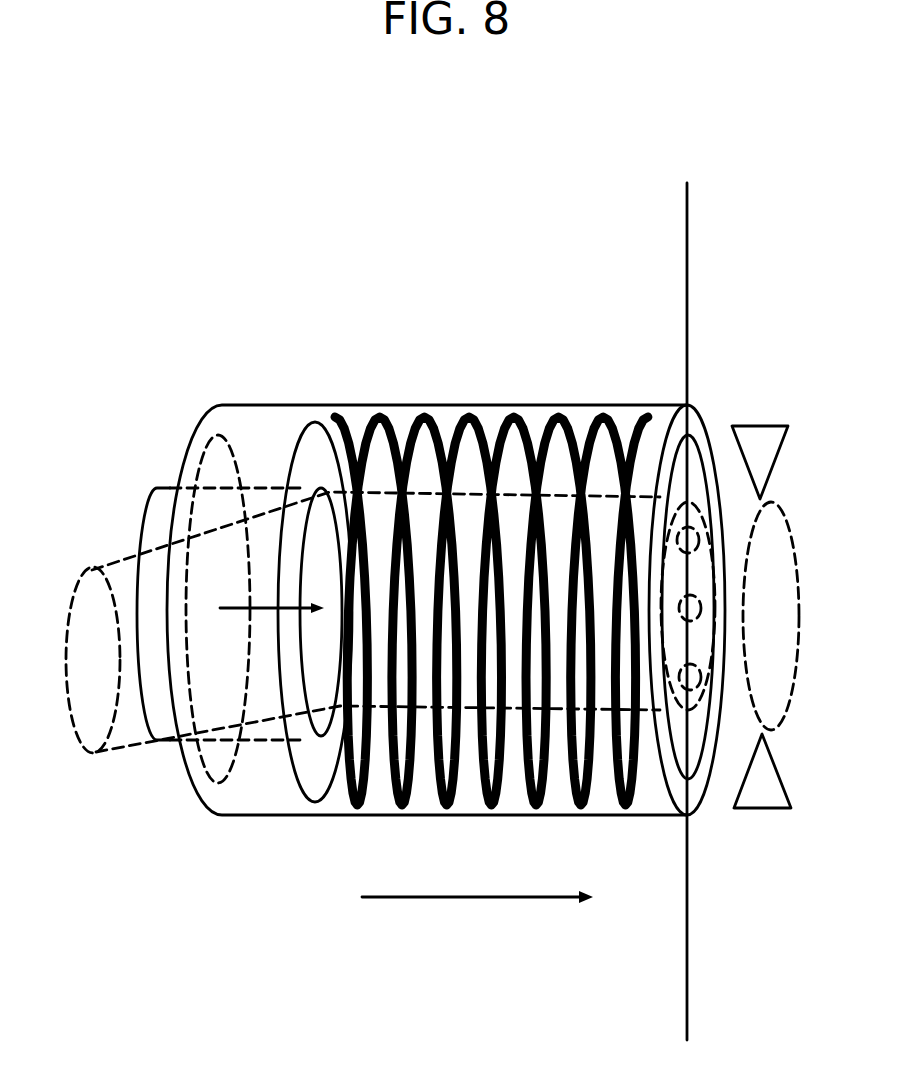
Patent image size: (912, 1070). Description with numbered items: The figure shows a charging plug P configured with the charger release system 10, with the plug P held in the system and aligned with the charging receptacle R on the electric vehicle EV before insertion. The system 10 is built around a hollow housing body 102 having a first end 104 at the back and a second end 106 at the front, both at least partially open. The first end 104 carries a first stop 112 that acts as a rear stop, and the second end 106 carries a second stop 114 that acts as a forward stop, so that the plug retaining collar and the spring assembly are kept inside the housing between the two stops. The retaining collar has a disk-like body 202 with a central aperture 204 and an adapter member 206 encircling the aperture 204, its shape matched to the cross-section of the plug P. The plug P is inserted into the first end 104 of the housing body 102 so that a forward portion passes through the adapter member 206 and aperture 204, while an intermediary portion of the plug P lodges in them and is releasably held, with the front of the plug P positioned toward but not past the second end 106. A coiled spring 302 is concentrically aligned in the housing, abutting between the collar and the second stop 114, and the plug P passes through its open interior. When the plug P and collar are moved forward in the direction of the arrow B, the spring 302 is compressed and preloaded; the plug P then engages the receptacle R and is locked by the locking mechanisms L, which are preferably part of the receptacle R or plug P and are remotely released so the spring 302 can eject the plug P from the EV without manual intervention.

The charger release system 10 is at (528, 228).
The housing body 102 is at (491, 561).
The first end 104 is at (188, 450).
The second end 106 is at (706, 418).
The first stop 112 is at (208, 782).
The second stop 114 is at (673, 756).
The body 202 is at (297, 442).
The central aperture 204 is at (262, 596).
The adapter member 206 is at (143, 515).
The coiled spring 302 is at (480, 432).
The charging plug P is at (93, 622).
The electric vehicle EV is at (660, 342).
The charging receptacle R is at (779, 618).
The locking mechanisms L is at (772, 468).
The first direction B is at (477, 914).